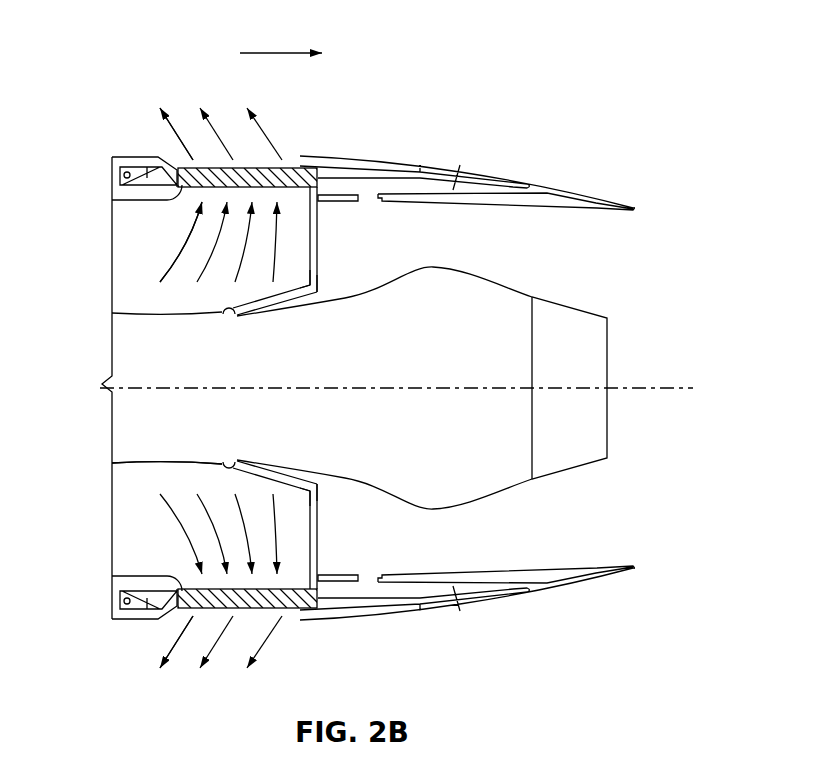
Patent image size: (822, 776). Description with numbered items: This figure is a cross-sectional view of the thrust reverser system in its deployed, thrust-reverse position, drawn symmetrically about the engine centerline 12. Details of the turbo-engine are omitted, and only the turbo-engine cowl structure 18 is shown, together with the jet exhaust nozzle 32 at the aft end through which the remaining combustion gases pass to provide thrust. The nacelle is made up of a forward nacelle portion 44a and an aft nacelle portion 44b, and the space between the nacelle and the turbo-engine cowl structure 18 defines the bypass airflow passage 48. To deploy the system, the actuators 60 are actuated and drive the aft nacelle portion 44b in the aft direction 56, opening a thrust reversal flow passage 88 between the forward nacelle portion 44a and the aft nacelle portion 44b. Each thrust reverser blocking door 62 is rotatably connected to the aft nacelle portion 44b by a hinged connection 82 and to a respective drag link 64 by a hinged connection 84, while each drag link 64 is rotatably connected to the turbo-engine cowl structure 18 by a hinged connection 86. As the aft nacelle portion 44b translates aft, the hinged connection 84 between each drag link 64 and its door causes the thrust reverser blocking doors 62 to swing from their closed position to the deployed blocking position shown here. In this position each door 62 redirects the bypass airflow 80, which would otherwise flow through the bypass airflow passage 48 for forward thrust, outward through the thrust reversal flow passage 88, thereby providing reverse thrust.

The engine central longitudinal axis 12 is at (665, 385).
The turbo-engine cowl structure 18 is at (188, 317).
The jet exhaust nozzle 32 is at (578, 299).
The forward nacelle portion 44a is at (127, 153).
The aft nacelle portion 44b is at (460, 165).
The bypass airflow passage 48 is at (150, 530).
The aft direction 56 is at (272, 52).
The actuators 60 is at (284, 169).
The thrust reverser blocking doors 62 is at (318, 245).
The drag links 64 is at (284, 297).
The bypass airflow 80 is at (173, 267).
The hinged connection 82 is at (308, 200).
The hinged connection 84 is at (321, 284).
The hinged connection 86 is at (231, 319).
The thrust reversal flow passage 88 is at (201, 162).